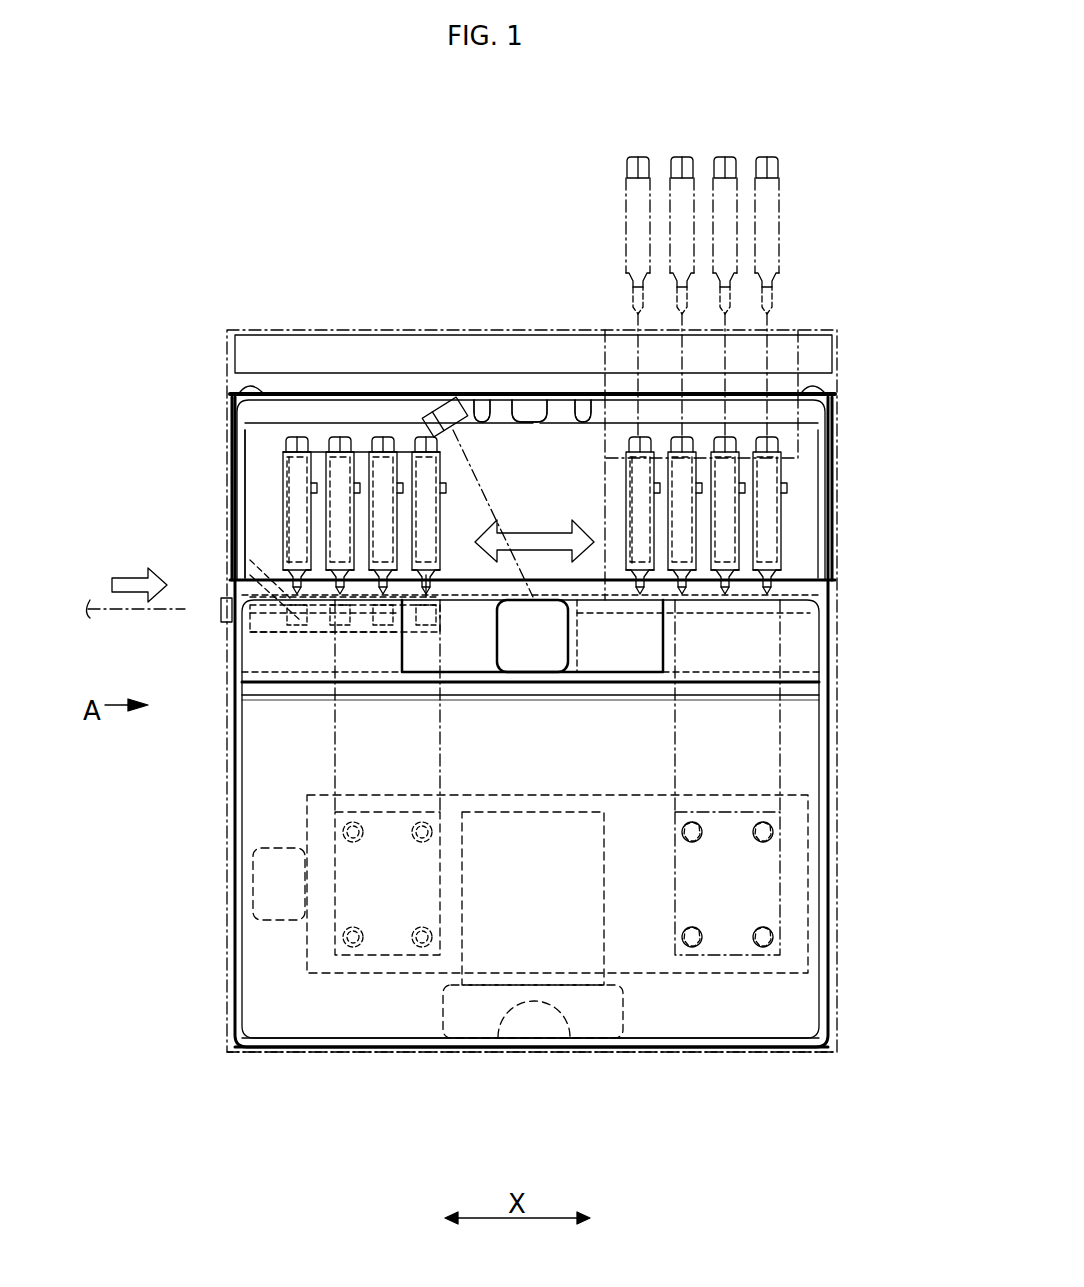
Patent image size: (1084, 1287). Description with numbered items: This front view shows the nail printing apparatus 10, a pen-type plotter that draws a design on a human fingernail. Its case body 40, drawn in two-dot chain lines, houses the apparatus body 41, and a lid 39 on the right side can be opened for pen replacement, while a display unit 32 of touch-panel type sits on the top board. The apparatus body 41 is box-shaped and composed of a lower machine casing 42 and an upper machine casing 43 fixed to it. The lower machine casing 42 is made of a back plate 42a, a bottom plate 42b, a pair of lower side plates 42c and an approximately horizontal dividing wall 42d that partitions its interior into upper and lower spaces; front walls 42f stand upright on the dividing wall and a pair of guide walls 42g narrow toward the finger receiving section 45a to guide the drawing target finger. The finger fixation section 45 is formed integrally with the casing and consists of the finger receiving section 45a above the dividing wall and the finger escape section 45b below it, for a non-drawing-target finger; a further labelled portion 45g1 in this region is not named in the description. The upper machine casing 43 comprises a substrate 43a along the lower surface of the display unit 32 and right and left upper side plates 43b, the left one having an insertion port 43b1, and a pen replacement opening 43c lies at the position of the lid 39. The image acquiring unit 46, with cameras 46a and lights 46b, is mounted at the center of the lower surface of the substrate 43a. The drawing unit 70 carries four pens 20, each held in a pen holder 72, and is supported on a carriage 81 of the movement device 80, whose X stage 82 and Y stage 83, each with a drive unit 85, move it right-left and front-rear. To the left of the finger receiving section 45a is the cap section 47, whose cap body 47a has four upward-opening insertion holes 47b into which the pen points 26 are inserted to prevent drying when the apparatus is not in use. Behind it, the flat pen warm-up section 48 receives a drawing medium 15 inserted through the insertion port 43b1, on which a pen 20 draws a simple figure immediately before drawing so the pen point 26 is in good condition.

The nail printing apparatus 10 is at (210, 240).
The drawing medium 15 is at (125, 612).
The pen 20 is at (680, 157).
The pen point 26 is at (240, 605).
The display unit 32 is at (482, 345).
The lid 39 is at (800, 355).
The case body 40 is at (228, 372).
The apparatus body 41 is at (378, 1055).
The lower machine casing 42 is at (235, 845).
The back plate 42a is at (690, 1022).
The bottom plate 42b is at (540, 1050).
The lower side plate 42c is at (232, 800).
The dividing wall 42d is at (540, 722).
The front wall 42f is at (540, 622).
The guide wall 42g is at (420, 640).
The upper machine casing 43 is at (233, 430).
The substrate 43a is at (365, 395).
The upper side plate 43b is at (237, 445).
The insertion port 43b1 is at (222, 605).
The pen replacement opening 43c is at (795, 335).
The finger fixation section 45 is at (615, 640).
The finger receiving section 45a is at (535, 675).
The finger escape section 45b is at (500, 690).
The carriage guide portion 45g1 is at (500, 655).
The image acquiring unit 46 is at (527, 385).
The camera 46a is at (458, 432).
The light 46b is at (482, 405).
The cap section 47 is at (285, 623).
The cap body 47a is at (300, 560).
The insertion hole 47b is at (430, 590).
The pen warm-up section 48 is at (292, 580).
The drawing unit 70 is at (290, 425).
The pen holder 72 is at (290, 470).
The movement device 80 is at (270, 990).
The carriage 81 is at (340, 876).
The X stage 82 is at (638, 942).
The Y stage 83 is at (475, 1010).
The drive unit 85 is at (255, 885).